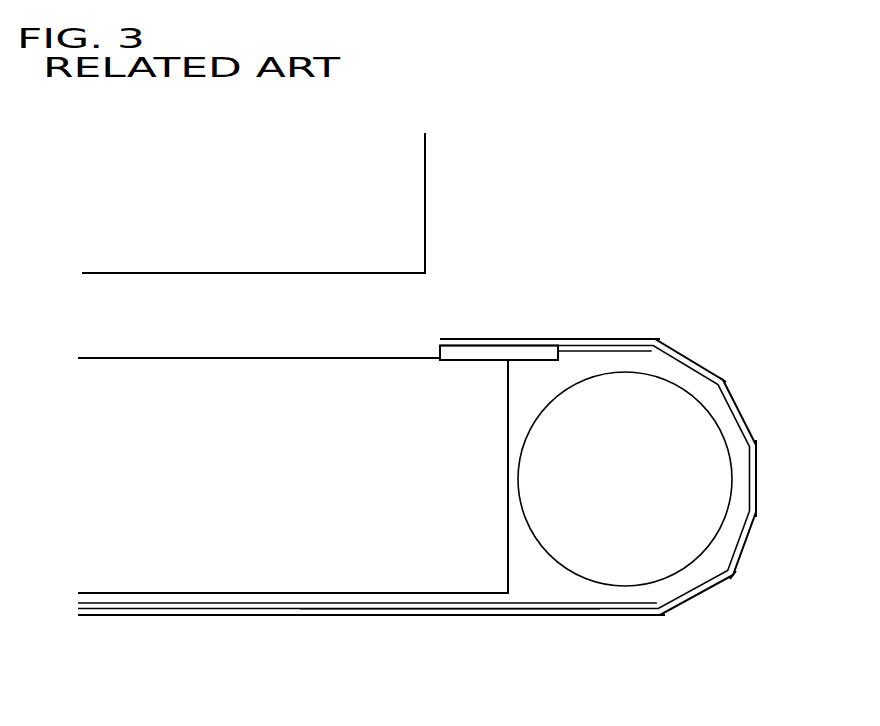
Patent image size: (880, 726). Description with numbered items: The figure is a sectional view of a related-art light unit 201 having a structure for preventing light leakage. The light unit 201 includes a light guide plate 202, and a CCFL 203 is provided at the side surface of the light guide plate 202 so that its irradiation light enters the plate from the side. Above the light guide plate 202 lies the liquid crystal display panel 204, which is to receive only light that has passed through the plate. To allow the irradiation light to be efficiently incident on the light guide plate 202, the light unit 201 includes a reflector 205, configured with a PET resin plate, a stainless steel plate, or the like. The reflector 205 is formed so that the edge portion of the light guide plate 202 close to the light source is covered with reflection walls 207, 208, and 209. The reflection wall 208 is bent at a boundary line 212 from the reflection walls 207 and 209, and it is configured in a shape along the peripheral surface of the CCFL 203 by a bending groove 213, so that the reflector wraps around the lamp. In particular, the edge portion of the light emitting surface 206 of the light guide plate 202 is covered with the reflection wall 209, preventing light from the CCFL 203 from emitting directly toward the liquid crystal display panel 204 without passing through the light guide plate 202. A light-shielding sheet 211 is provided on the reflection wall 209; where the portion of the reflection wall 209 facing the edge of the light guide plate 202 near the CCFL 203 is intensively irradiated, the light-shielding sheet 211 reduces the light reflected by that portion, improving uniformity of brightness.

The light unit 201 is at (758, 270).
The light guide plate 202 is at (188, 558).
The CCFL 203 is at (615, 553).
The liquid crystal display panel 204 is at (407, 181).
The reflector 205 is at (310, 617).
The light emitting surface 206 is at (478, 310).
The reflection wall 207 is at (482, 617).
The reflection wall 208 is at (745, 402).
The reflection wall 209 is at (594, 339).
The light-shielding sheet 211 is at (540, 346).
The boundary line 212 is at (657, 339).
The bending groove 213 is at (725, 378).